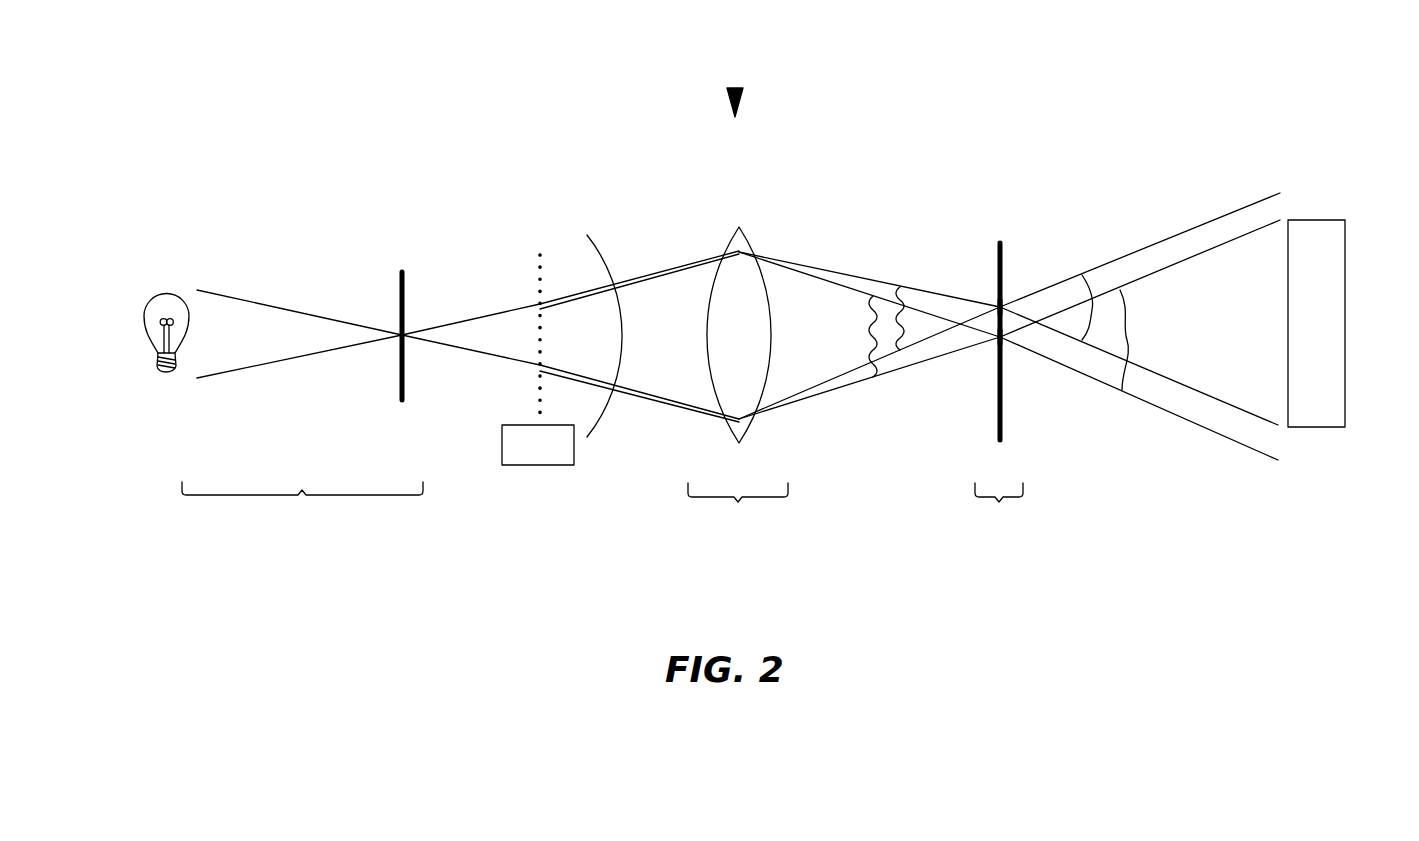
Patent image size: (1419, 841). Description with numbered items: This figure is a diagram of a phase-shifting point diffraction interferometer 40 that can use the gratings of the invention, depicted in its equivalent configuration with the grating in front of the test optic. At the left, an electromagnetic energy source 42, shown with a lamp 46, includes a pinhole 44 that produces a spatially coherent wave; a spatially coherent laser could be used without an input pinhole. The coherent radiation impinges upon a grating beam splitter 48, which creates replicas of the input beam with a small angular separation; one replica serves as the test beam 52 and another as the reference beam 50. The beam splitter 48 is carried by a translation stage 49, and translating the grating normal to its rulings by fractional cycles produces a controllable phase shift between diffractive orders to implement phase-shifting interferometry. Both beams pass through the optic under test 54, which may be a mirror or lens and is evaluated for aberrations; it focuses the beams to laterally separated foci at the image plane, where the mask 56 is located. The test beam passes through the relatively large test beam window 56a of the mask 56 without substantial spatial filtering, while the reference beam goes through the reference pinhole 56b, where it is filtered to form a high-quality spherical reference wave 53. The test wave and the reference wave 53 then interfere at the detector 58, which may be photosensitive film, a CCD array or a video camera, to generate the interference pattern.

The phase-shifting point diffraction interferometer 40 is at (735, 100).
The electromagnetic energy source 42 is at (302, 510).
The pinhole 44 is at (395, 267).
The lamp 46 is at (160, 295).
The beam splitter 48 is at (540, 253).
The translation stage 49 is at (537, 470).
The reference beam 50 is at (875, 287).
The test beam 52 is at (947, 348).
The spherical reference wave 53 is at (1123, 263).
The optic under test 54 is at (738, 384).
The mask 56 is at (999, 393).
The test beam window 56a is at (1000, 307).
The reference pinhole 56b is at (1000, 337).
The detector 58 is at (1325, 268).